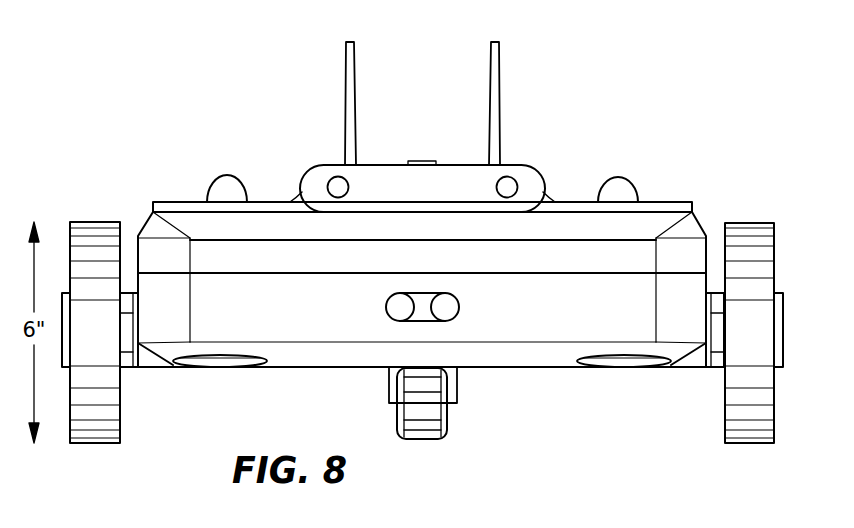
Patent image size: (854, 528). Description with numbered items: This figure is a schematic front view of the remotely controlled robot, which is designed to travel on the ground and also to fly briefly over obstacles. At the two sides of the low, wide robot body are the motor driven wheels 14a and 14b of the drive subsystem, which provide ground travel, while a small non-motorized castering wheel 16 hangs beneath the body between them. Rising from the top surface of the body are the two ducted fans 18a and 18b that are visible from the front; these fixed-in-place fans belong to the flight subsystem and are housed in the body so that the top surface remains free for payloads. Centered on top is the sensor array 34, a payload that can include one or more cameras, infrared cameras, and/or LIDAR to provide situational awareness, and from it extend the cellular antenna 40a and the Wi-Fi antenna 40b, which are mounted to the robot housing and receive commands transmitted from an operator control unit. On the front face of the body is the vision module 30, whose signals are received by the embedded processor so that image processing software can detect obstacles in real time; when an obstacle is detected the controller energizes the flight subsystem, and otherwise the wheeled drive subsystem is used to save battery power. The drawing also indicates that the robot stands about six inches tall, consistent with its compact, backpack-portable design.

The motor driven wheel 14a is at (745, 226).
The motor driven wheel 14b is at (100, 226).
The non-motorized castering wheel 16 is at (440, 423).
The ducted fan 18a is at (226, 190).
The ducted fan 18b is at (620, 188).
The vision module 30 is at (400, 298).
The sensor array 34 is at (385, 183).
The cellular antenna 40a is at (349, 56).
The Wi-Fi antenna 40b is at (497, 55).